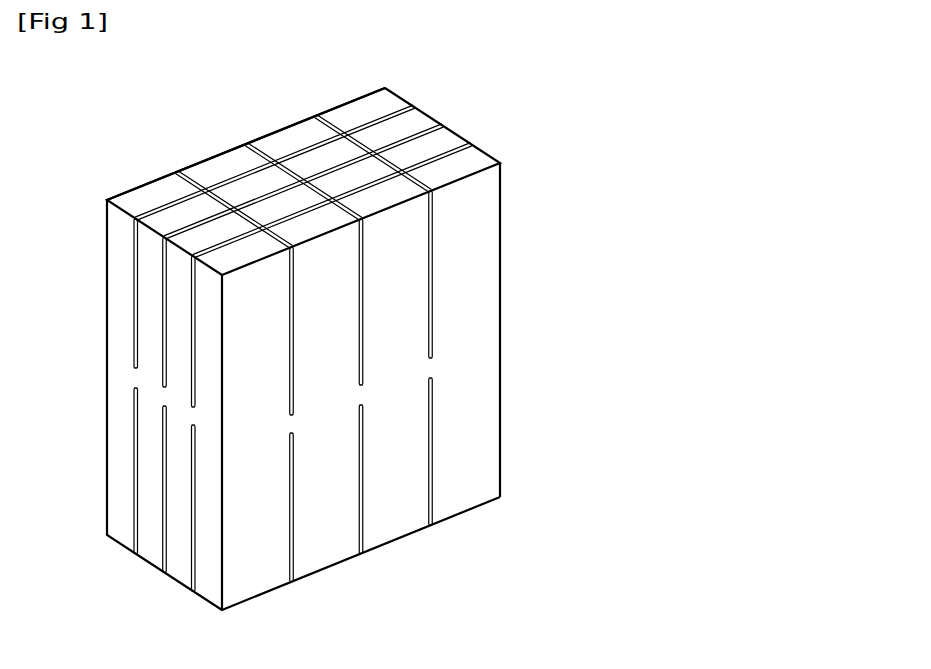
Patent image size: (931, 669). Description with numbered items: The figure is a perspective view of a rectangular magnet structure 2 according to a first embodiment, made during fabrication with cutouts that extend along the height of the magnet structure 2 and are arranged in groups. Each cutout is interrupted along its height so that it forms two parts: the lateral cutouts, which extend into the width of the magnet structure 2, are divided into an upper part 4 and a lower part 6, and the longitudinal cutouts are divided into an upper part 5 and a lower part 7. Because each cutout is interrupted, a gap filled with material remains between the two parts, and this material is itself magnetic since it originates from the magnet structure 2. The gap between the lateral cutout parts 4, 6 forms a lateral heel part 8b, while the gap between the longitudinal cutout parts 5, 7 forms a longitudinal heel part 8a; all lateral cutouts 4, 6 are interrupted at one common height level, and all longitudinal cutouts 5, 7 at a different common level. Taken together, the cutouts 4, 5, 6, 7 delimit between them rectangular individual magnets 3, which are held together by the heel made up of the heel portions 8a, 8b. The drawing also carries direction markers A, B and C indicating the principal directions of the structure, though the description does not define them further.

The magnet structure 2 is at (521, 159).
The individual magnet 3 is at (138, 200).
The lateral cutout part 4 is at (434, 218).
The longitudinal cutout part 5 is at (135, 245).
The lateral cutout part 6 is at (433, 403).
The longitudinal cutout part 7 is at (134, 436).
The longitudinal heel part 8a is at (135, 378).
The lateral heel part 8b is at (433, 367).
The direction A is at (137, 578).
The direction B is at (402, 560).
The direction C is at (458, 80).